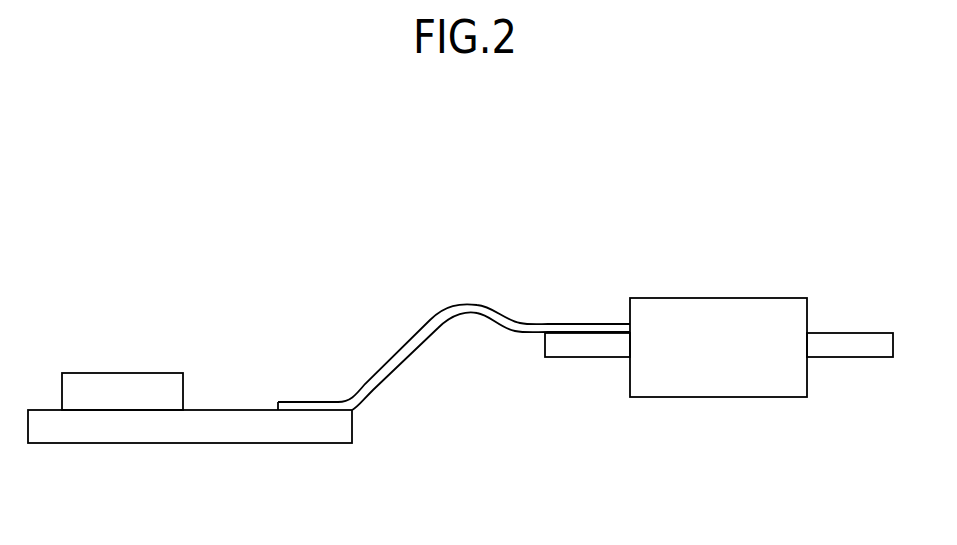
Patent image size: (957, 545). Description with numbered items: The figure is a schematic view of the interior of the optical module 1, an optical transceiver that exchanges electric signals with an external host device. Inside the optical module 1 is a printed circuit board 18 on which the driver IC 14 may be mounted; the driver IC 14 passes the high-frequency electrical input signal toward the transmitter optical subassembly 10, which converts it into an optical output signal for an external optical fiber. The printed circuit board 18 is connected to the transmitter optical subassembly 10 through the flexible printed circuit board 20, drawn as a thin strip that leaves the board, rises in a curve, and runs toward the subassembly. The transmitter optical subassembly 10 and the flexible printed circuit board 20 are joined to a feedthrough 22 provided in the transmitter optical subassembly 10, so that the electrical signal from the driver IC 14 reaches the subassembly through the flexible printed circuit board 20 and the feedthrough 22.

The optical module 1 is at (512, 268).
The transmitter optical subassembly 10 is at (737, 307).
The driver IC 14 is at (105, 380).
The printed circuit board 18 is at (237, 435).
The flexible printed circuit board 20 is at (370, 378).
The feedthrough 22 is at (590, 358).